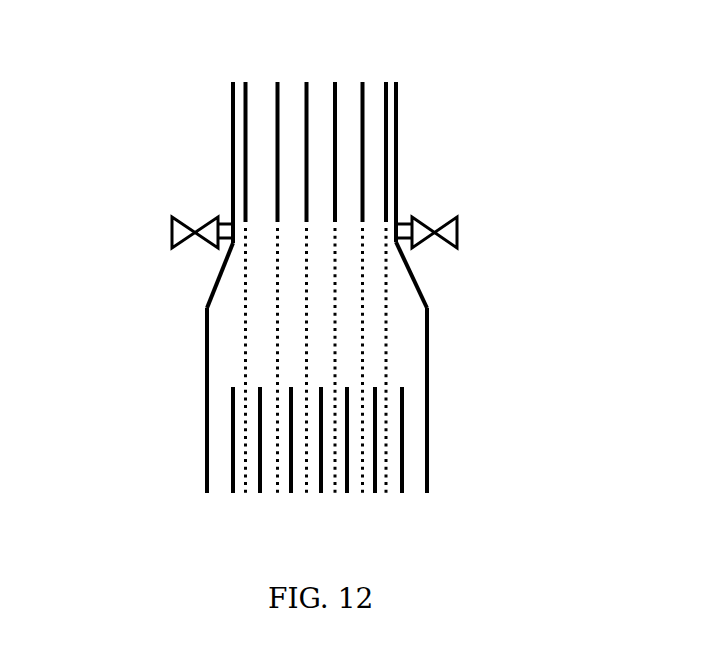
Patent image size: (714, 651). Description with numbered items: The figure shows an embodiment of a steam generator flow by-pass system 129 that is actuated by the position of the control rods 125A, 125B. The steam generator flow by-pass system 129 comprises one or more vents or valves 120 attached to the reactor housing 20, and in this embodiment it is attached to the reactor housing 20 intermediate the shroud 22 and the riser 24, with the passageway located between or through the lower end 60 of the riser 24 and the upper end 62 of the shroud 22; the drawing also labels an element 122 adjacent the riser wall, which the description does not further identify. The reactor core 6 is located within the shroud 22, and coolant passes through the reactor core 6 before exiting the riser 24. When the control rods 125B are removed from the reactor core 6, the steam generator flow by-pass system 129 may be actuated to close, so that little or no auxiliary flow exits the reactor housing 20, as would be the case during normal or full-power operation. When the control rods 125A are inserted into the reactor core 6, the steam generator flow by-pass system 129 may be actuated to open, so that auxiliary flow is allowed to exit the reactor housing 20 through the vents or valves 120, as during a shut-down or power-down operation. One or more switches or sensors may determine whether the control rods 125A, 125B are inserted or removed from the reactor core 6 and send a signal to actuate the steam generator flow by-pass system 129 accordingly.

The reactor core 6 is at (225, 405).
The reactor housing 20 is at (170, 270).
The shroud 22 is at (437, 322).
The riser 24 is at (401, 128).
The lower end of the riser 60 is at (401, 203).
The upper end of the shroud 62 is at (410, 258).
The vents or valves 120 is at (167, 227).
The channel 122 is at (386, 193).
The control rods 125A is at (233, 338).
The control rods 125B is at (298, 80).
The steam generator flow by-pass system 129 is at (175, 175).